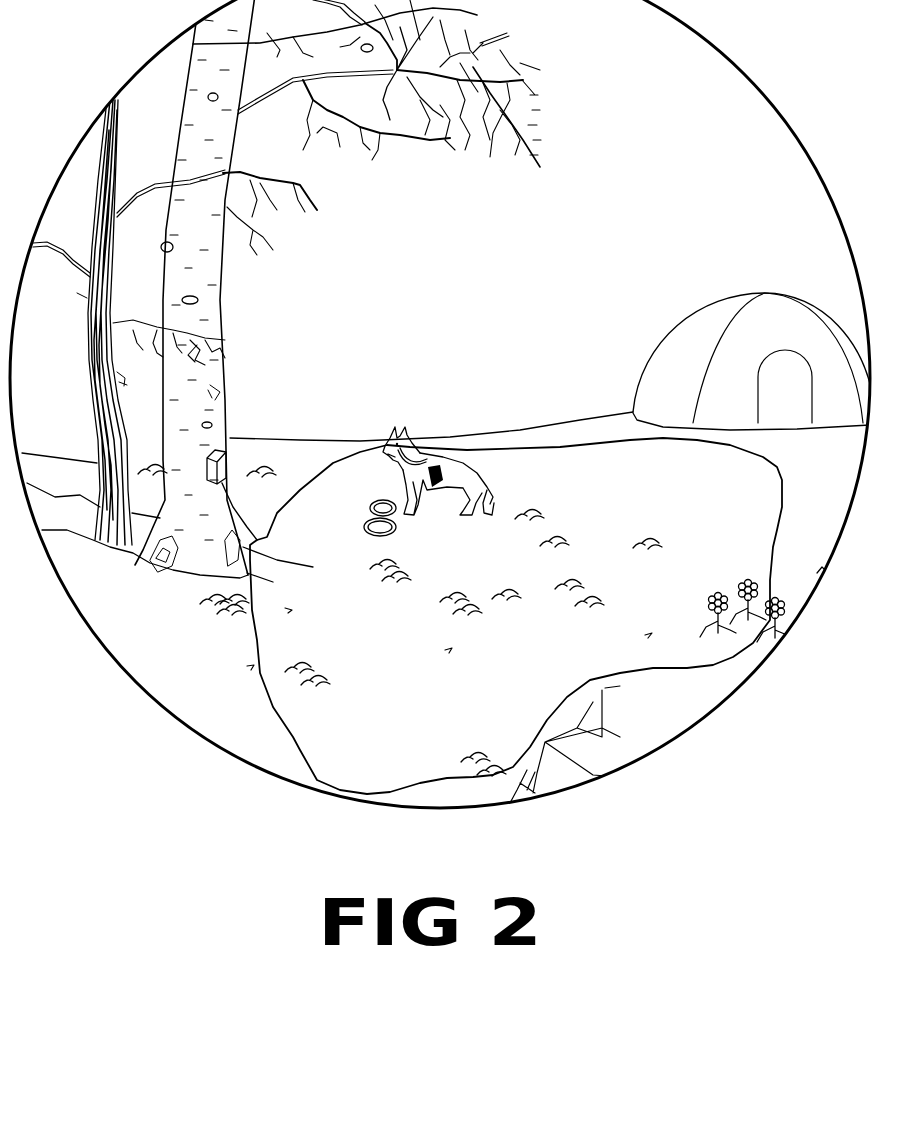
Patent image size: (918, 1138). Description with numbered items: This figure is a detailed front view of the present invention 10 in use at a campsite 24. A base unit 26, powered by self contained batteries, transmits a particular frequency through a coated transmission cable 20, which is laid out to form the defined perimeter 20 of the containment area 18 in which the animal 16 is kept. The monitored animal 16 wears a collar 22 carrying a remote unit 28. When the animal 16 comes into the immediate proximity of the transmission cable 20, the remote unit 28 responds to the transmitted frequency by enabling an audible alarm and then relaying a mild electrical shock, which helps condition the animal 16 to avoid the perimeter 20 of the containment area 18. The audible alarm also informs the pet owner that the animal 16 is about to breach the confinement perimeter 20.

The present invention 10 is at (389, 383).
The animal 16 is at (459, 495).
The containment area 18 is at (656, 523).
The coated transmission cable 20 is at (777, 543).
The animal's collar 22 is at (430, 457).
The campsite 24 is at (566, 297).
The base unit 26 is at (228, 468).
The remote unit 28 is at (403, 450).